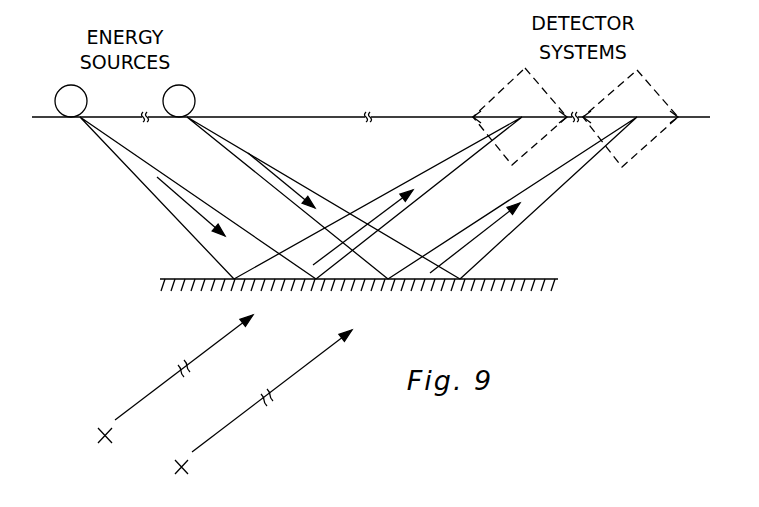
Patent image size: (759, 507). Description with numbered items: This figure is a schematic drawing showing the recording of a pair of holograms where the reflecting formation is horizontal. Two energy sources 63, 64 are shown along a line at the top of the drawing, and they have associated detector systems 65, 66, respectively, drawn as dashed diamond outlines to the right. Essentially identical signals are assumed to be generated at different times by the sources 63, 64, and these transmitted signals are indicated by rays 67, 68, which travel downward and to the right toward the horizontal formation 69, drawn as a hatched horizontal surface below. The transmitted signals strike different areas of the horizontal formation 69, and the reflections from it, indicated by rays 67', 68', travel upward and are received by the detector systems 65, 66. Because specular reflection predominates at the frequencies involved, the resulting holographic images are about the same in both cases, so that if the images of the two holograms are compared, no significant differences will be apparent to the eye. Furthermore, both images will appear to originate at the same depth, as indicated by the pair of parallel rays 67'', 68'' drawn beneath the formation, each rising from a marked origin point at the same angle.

The energy source 63 is at (63, 92).
The energy source 64 is at (188, 92).
The detector system 65 is at (520, 116).
The detector system 66 is at (630, 118).
The ray 67 is at (198, 198).
The ray 68 is at (323, 198).
The ray 67' is at (378, 198).
The ray 68' is at (512, 198).
The horizontal formation 69 is at (502, 282).
The ray 67'' is at (175, 379).
The ray 68'' is at (263, 402).